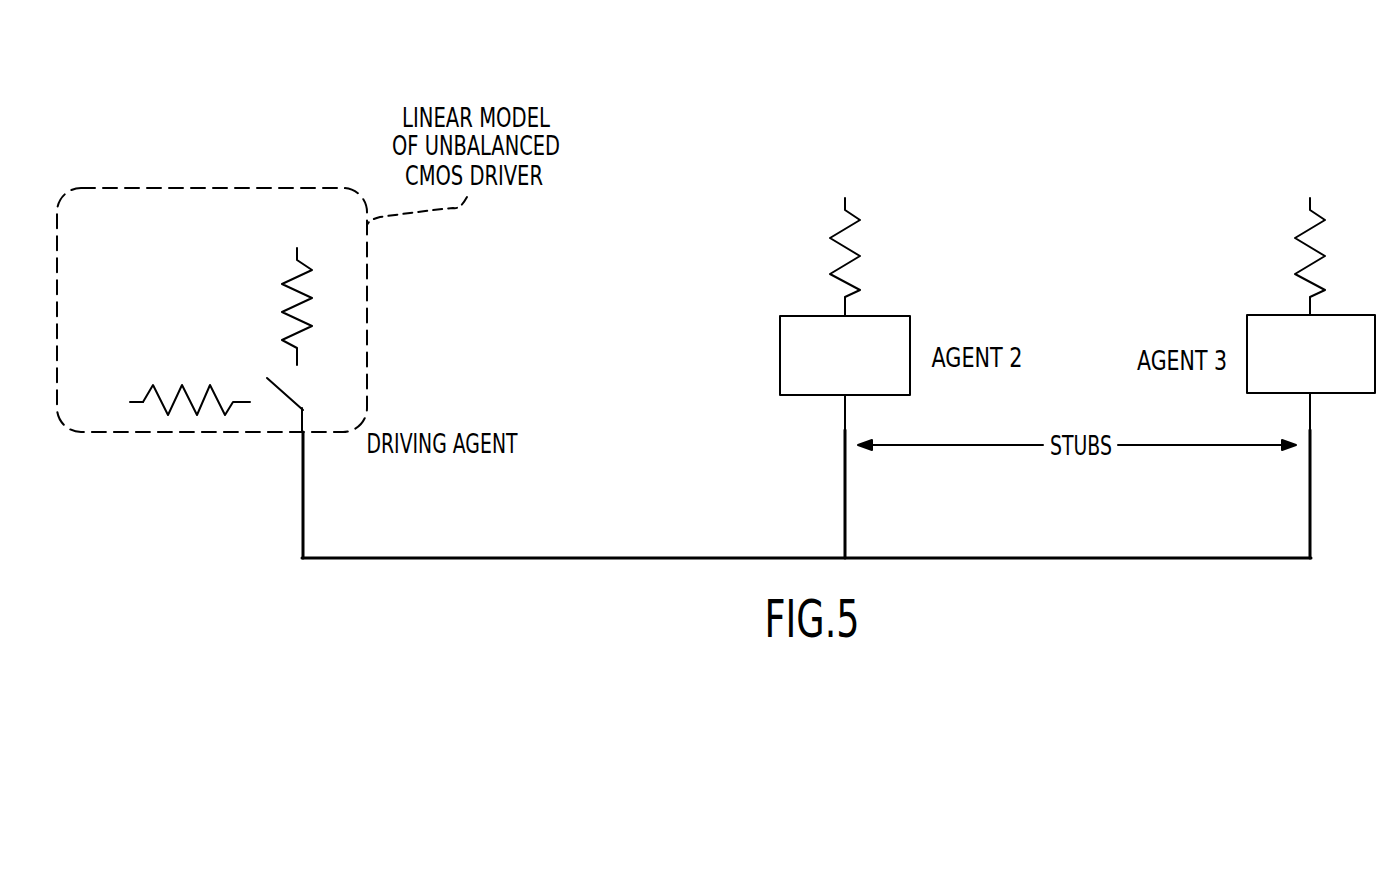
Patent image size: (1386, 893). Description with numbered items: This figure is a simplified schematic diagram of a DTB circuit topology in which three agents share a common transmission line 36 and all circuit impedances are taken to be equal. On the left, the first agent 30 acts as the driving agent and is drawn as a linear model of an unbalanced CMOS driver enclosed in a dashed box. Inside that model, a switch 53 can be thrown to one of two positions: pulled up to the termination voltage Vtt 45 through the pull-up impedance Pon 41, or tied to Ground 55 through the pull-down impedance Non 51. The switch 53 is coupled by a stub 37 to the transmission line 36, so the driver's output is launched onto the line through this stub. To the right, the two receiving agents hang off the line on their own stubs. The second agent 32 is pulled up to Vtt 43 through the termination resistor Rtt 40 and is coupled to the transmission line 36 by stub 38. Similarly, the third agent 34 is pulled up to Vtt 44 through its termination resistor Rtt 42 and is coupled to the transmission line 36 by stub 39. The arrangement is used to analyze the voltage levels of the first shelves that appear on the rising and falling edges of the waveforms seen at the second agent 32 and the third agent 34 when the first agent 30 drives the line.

The agent 1 30 is at (107, 187).
The Vtt 45 is at (281, 229).
The Pon 41 is at (285, 303).
The Non 51 is at (150, 383).
The Ground 55 is at (107, 387).
The switch 53 is at (293, 402).
The stub 37 is at (304, 512).
The transmission line 36 is at (637, 560).
The stub 38 is at (845, 488).
The stub 39 is at (1310, 480).
The agent 2 32 is at (780, 345).
The Rtt 40 is at (830, 247).
The Vtt 43 is at (847, 157).
The agent 3 34 is at (1247, 318).
The Rtt 42 is at (1295, 250).
The Vtt 44 is at (1305, 163).